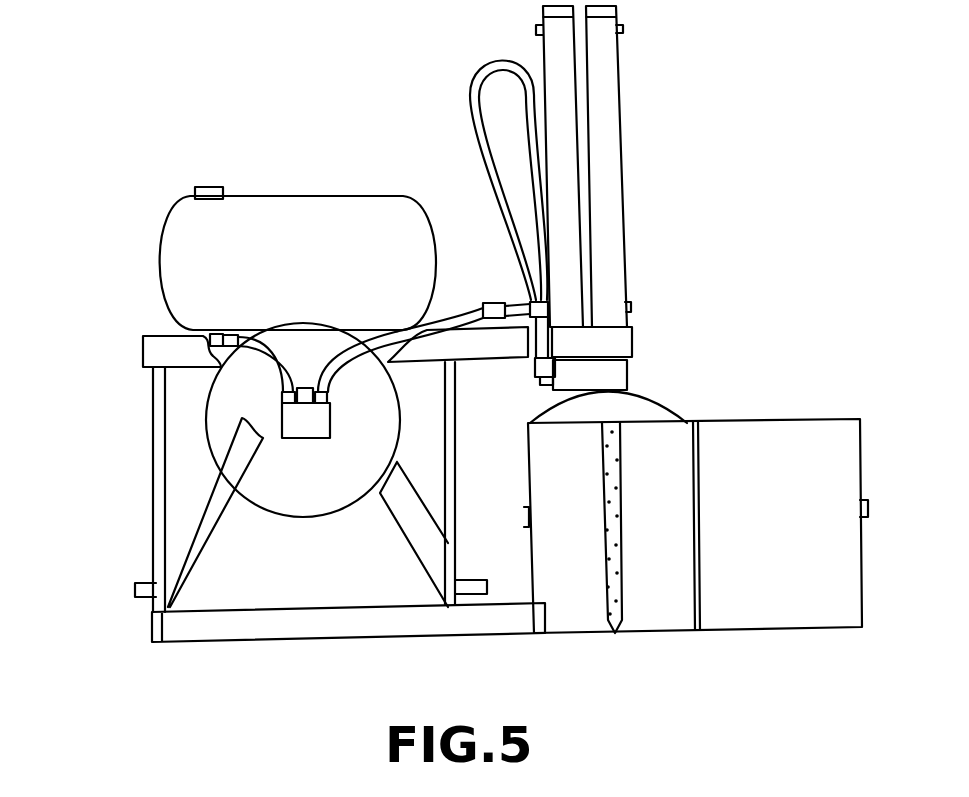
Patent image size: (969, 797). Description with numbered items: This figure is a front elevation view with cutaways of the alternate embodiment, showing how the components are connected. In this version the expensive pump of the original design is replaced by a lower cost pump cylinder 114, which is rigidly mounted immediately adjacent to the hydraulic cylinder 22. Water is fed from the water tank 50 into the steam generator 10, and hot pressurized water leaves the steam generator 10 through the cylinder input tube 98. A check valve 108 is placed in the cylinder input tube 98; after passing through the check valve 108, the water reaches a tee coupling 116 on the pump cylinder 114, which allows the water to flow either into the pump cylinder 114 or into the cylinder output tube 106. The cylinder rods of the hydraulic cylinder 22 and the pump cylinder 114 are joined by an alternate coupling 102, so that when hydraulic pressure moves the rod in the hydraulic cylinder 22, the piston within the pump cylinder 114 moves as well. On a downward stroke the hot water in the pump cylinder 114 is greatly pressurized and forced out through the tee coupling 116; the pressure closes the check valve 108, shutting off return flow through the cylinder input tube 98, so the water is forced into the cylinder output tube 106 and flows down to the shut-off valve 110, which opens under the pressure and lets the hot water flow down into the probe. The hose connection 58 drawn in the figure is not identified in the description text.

The steam generator 10 is at (275, 497).
The hydraulic cylinder 22 is at (618, 95).
The water tank 50 is at (190, 222).
The supply hose 58 is at (277, 370).
The cylinder input tube 98 is at (447, 307).
The alternate coupling 102 is at (617, 372).
The cylinder output tube 106 is at (473, 77).
The check valve 108 is at (493, 303).
The shut-off valve 110 is at (537, 365).
The pump cylinder 114 is at (545, 50).
The tee coupling 116 is at (550, 303).